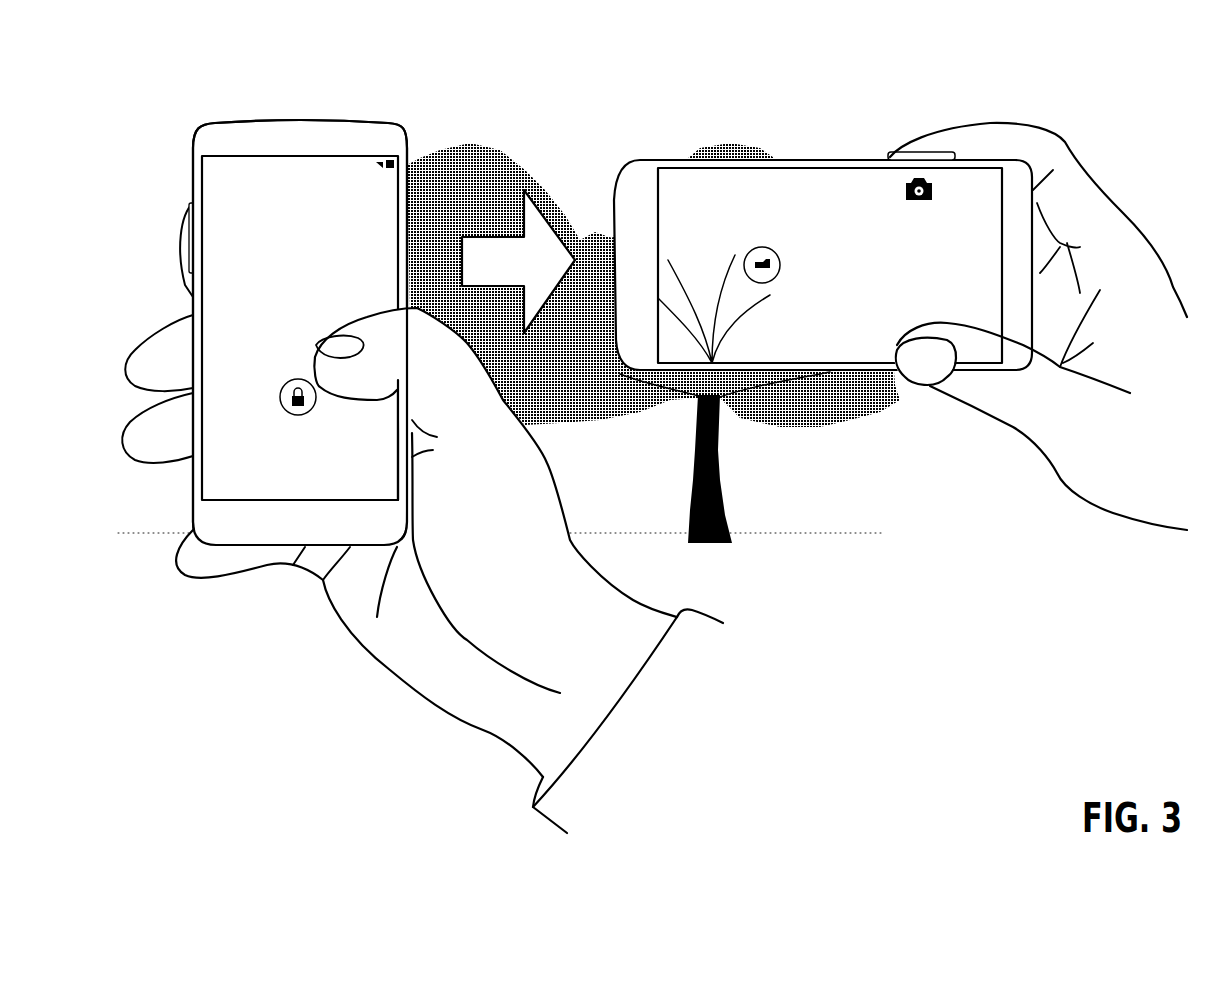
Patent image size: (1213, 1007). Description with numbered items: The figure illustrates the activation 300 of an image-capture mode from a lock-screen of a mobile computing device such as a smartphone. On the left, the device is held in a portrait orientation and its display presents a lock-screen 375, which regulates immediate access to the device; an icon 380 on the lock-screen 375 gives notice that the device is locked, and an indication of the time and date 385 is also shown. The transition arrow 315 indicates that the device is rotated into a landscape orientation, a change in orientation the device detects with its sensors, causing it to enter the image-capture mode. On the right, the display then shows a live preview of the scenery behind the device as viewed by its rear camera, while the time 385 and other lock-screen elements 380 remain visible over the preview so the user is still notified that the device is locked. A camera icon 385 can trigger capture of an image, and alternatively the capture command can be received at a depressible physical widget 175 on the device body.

The activation of an image-capture mode 300 is at (1174, 86).
The transition arrow 315 is at (517, 258).
The lock-screen 375 is at (262, 175).
The icon 380 is at (285, 410).
The time and date indication / camera icon 385 is at (320, 200).
The physical widget 175 is at (947, 152).